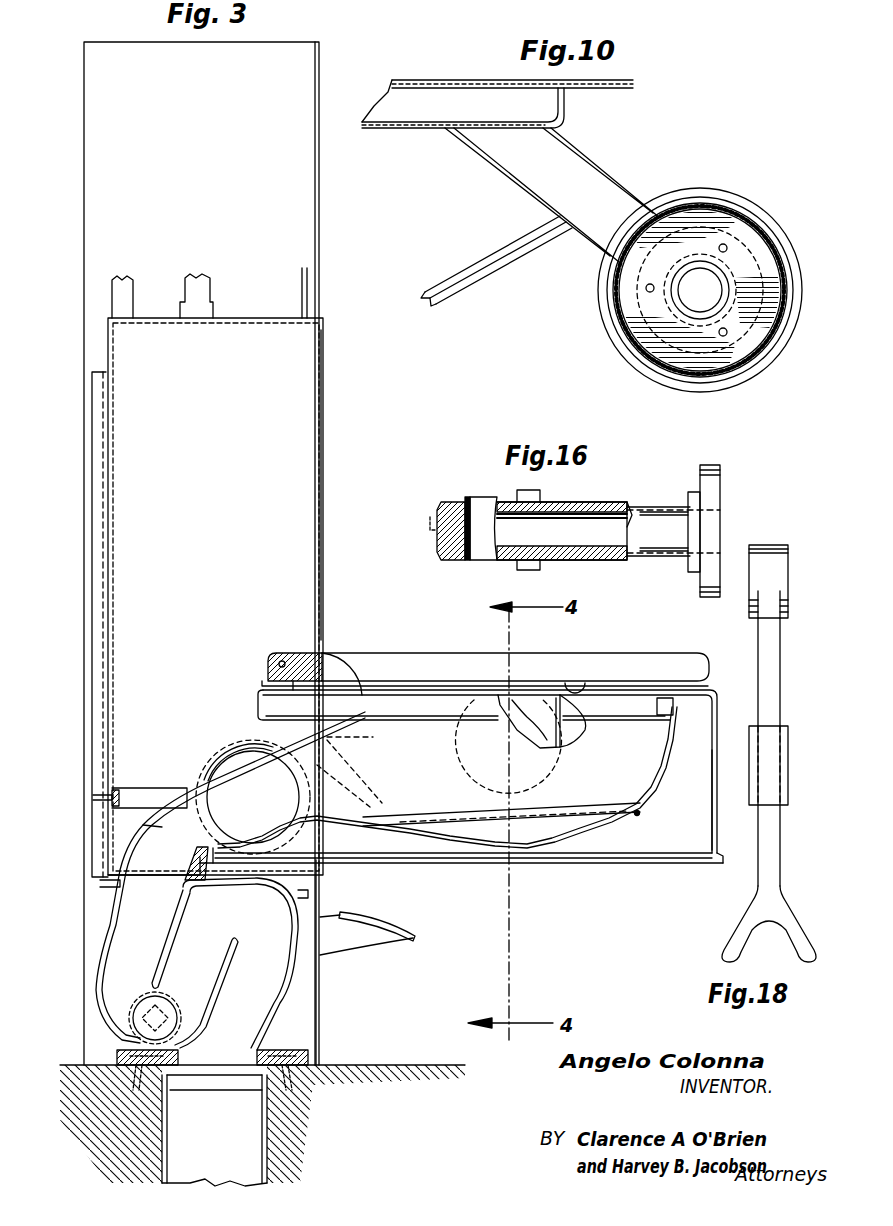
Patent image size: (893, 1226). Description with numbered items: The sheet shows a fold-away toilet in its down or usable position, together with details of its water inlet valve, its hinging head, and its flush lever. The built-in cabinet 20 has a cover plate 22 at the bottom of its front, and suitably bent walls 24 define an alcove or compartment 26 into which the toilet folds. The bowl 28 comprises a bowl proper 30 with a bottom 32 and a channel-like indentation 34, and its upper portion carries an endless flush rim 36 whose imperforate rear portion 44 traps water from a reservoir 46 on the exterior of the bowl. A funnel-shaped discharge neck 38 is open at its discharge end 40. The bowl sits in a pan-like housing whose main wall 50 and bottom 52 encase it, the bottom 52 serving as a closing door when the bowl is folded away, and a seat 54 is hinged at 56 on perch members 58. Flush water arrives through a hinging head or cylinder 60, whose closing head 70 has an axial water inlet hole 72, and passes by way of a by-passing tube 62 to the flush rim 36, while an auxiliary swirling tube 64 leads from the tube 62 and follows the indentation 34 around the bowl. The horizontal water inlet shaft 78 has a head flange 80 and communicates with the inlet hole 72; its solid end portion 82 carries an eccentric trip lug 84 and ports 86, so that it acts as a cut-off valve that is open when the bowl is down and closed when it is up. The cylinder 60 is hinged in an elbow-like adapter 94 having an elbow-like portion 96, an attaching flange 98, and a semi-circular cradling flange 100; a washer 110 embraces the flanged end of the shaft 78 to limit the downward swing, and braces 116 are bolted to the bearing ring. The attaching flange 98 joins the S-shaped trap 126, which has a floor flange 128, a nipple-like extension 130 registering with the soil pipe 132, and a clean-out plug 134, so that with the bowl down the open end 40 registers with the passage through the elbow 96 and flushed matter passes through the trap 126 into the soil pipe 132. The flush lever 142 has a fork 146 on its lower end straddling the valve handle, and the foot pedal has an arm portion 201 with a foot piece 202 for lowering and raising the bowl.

In FIG. 3, the cabinet 20 is at (326, 216).
In FIG. 3, the cover plate 22 is at (320, 1023).
In FIG. 3, the walls 24 is at (248, 318).
In FIG. 3, the alcove or compartment 26 is at (300, 455).
In FIG. 3, the bowl 28 is at (670, 784).
In FIG. 3, the bowl proper 30 is at (653, 793).
In FIG. 3, the bottom 32 is at (530, 863).
In FIG. 3, the channel-like indentation 34 is at (597, 810).
In FIG. 3, the flush rim or ring 36 is at (662, 722).
In FIG. 10, the flush rim or ring 36 is at (418, 130).
In FIG. 3, the discharge neck 38 is at (245, 765).
In FIG. 3, the discharge end 40 is at (213, 815).
In FIG. 3, the rear portion 44 is at (352, 712).
In FIG. 3, the reservoir 46 is at (450, 745).
In FIG. 3, the main rim or wall 50 is at (716, 840).
In FIG. 3, the bottom 52 is at (627, 865).
In FIG. 3, the seat 54 is at (447, 655).
In FIG. 3, the hinge 56 is at (281, 661).
In FIG. 3, the perch members 58 is at (266, 688).
In FIG. 3, the hinging head or cylinder 60 is at (232, 768).
In FIG. 10, the hinging head or cylinder 60 is at (697, 204).
In FIG. 3, the by-passing tube 62 is at (365, 741).
In FIG. 10, the by-passing tube 62 is at (588, 160).
In FIG. 3, the auxiliary water swirling tube 64 is at (383, 802).
In FIG. 10, the auxiliary water swirling tube 64 is at (523, 272).
In FIG. 10, the closing head 70 is at (729, 225).
In FIG. 10, the water inlet hole 72 is at (693, 311).
In FIG. 16, the water inlet shaft or tube 78 is at (606, 508).
In FIG. 16, the head flange 80 is at (710, 470).
In FIG. 16, the solid or closed end portion 82 is at (440, 547).
In FIG. 16, the trip lug 84 is at (430, 517).
In FIG. 16, the ports 86 is at (477, 505).
In FIG. 3, the elbow-like fitting or adapter 94 is at (187, 780).
In FIG. 3, the elbow-like portion 96 is at (164, 828).
In FIG. 3, the attaching flange 98 is at (120, 867).
In FIG. 3, the cradling or adaptor flange 100 is at (300, 830).
In FIG. 10, the washer 110 is at (618, 342).
In FIG. 3, the braces 116 is at (148, 787).
In FIG. 3, the S-shaped trap 126 is at (106, 913).
In FIG. 3, the floor flange 128 is at (290, 1050).
In FIG. 3, the nipple-like extension 130 is at (223, 1078).
In FIG. 3, the soil pipe 132 is at (170, 1148).
In FIG. 3, the clean-out plug 134 is at (168, 998).
In FIG. 18, the lever 142 is at (771, 677).
In FIG. 18, the fork 146 is at (741, 935).
In FIG. 3, the arm or toe portion 201 is at (345, 945).
In FIG. 3, the foot piece 202 is at (392, 927).